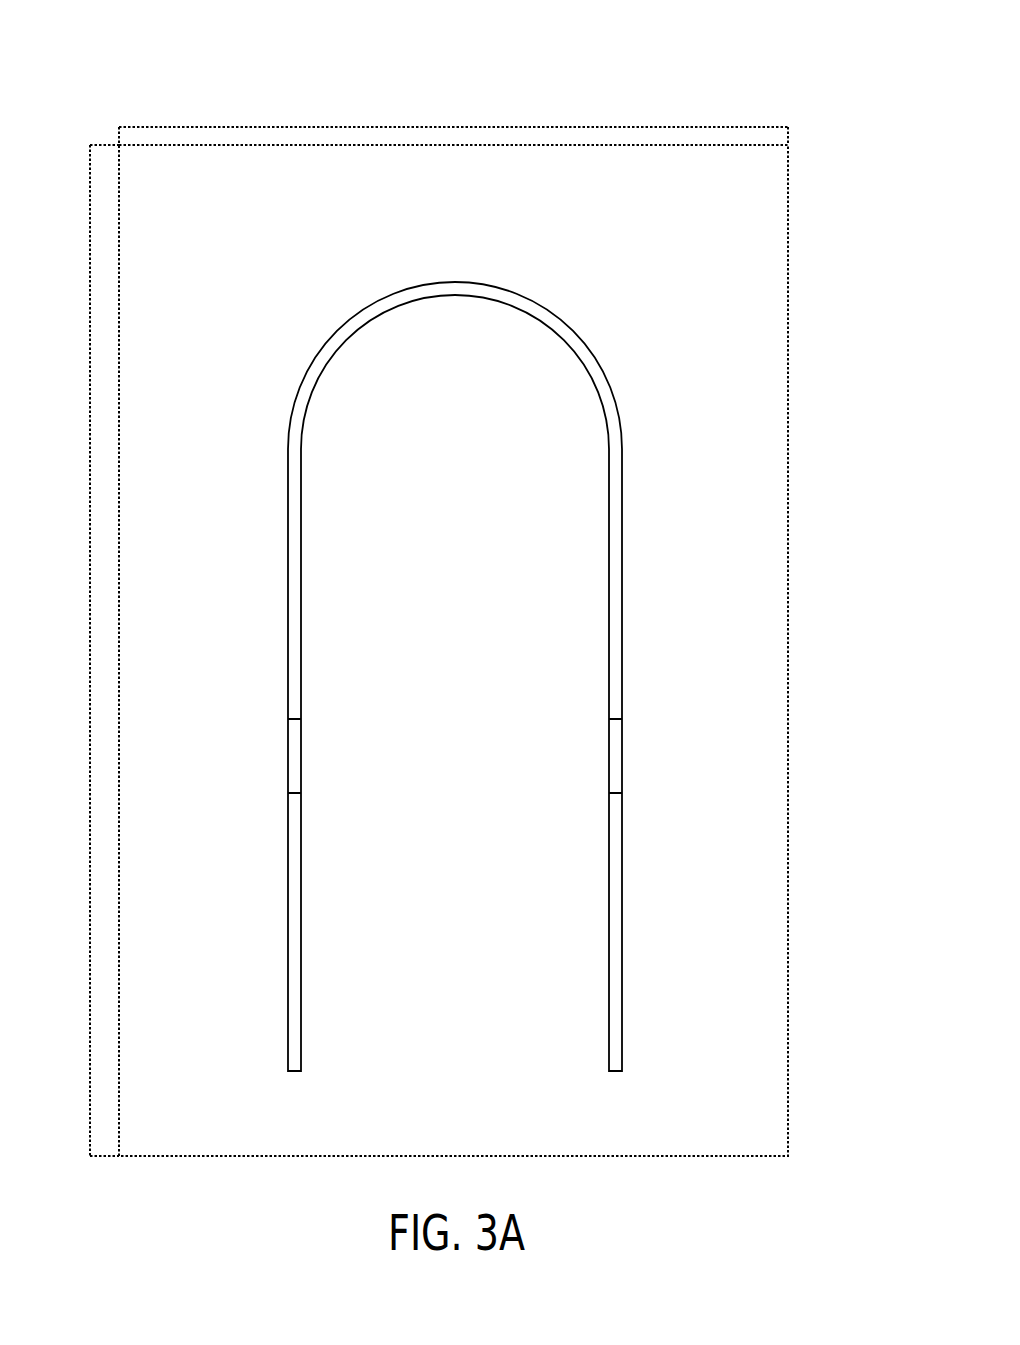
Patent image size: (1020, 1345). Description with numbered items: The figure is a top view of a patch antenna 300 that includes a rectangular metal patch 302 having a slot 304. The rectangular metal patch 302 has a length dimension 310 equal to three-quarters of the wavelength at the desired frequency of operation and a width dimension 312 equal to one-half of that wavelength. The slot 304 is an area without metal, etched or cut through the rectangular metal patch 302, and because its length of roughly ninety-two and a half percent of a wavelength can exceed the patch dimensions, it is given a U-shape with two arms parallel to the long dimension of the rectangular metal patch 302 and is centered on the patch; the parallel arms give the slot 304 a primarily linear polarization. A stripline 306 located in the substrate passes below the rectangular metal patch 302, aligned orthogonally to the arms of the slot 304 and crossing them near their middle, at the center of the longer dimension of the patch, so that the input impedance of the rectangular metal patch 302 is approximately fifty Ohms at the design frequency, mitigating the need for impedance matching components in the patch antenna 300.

The patch antenna 300 is at (783, 70).
The rectangular metal patch 302 is at (777, 518).
The slot 304 is at (592, 370).
The stripline 306 is at (297, 738).
The length dimension 310 is at (85, 650).
The width dimension 312 is at (453, 119).